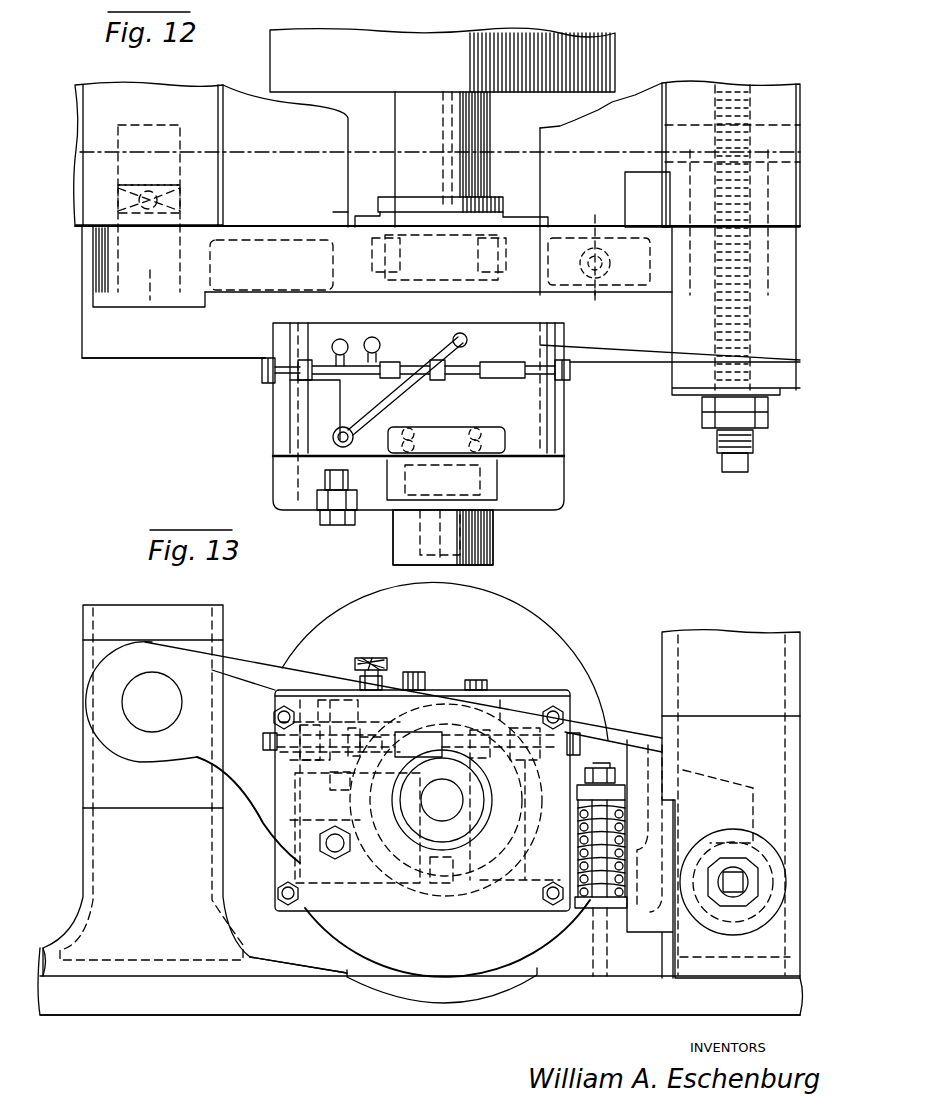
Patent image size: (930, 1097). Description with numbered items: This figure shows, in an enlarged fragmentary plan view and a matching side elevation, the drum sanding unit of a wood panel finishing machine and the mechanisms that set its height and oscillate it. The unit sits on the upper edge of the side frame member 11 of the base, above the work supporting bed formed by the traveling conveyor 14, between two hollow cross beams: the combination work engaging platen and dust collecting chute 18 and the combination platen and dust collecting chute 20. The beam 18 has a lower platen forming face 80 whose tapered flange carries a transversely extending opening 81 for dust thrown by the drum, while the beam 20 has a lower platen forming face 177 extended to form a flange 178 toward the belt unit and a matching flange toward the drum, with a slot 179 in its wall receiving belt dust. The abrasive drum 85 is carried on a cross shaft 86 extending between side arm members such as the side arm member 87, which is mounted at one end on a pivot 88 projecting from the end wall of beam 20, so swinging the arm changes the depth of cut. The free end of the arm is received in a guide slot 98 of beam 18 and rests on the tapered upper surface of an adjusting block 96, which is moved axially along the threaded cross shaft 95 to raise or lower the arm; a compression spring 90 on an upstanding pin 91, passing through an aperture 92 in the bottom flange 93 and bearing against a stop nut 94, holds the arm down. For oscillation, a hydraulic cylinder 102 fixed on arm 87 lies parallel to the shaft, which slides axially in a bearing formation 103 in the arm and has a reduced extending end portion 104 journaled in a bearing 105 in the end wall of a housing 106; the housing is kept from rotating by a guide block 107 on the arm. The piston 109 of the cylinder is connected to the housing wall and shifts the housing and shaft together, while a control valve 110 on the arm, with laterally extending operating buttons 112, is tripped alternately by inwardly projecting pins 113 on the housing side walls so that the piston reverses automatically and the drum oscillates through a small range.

In FIG. 12, the side frame member 11 is at (150, 360).
In FIG. 13, the side frame member 11 is at (303, 1009).
In FIG. 12, the traveling conveyor 14 is at (465, 152).
In FIG. 12, the combination work engaging platen and dust collecting chute 18 is at (662, 141).
In FIG. 13, the combination work engaging platen and dust collecting chute 18 is at (662, 660).
In FIG. 12, the combination platen and dust collecting chute 20 is at (222, 133).
In FIG. 13, the combination platen and dust collecting chute 20 is at (222, 613).
In FIG. 13, the lower platen forming face 80 is at (654, 978).
In FIG. 13, the transversely extending opening 81 is at (667, 822).
In FIG. 12, the drum 85 is at (554, 92).
In FIG. 12, the cross shaft 86 is at (395, 137).
In FIG. 12, the side arm member 87 is at (258, 236).
In FIG. 13, the side arm member 87 is at (272, 672).
In FIG. 12, the pivot 88 is at (149, 277).
In FIG. 13, the pivot 88 is at (152, 722).
In FIG. 12, the compression spring 90 is at (599, 245).
In FIG. 13, the compression spring 90 is at (578, 830).
In FIG. 12, the upstanding pin 91 is at (598, 292).
In FIG. 13, the upstanding pin 91 is at (595, 944).
In FIG. 13, the aperture 92 is at (622, 943).
In FIG. 13, the bottom flange 93 is at (563, 910).
In FIG. 13, the stop nut 94 is at (608, 766).
In FIG. 12, the cross shaft 95 is at (750, 95).
In FIG. 12, the adjusting block 96 is at (768, 263).
In FIG. 12, the guide slot 98 is at (688, 230).
In FIG. 12, the hydraulic cylinder 102 is at (325, 392).
In FIG. 12, the bearing formation 103 is at (333, 255).
In FIG. 12, the extending end portion 104 is at (486, 532).
In FIG. 12, the bearing 105 is at (490, 444).
In FIG. 12, the housing 106 is at (564, 433).
In FIG. 13, the housing 106 is at (377, 912).
In FIG. 13, the guide block 107 is at (442, 912).
In FIG. 12, the piston 109 is at (320, 480).
In FIG. 12, the control valve 110 is at (368, 390).
In FIG. 13, the control valve 110 is at (418, 740).
In FIG. 12, the operating button 112 is at (300, 365).
In FIG. 13, the operating button 112 is at (272, 732).
In FIG. 12, the pin 113 is at (262, 374).
In FIG. 13, the pin 113 is at (275, 758).
In FIG. 13, the lower platen forming face 177 is at (165, 977).
In FIG. 13, the flange 178 is at (300, 968).
In FIG. 13, the slot 179 is at (83, 842).